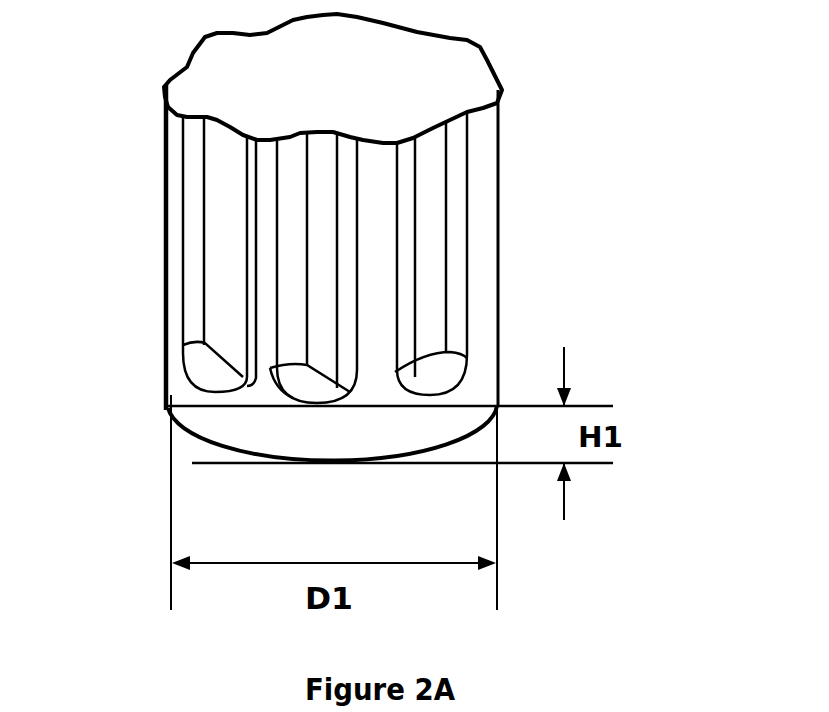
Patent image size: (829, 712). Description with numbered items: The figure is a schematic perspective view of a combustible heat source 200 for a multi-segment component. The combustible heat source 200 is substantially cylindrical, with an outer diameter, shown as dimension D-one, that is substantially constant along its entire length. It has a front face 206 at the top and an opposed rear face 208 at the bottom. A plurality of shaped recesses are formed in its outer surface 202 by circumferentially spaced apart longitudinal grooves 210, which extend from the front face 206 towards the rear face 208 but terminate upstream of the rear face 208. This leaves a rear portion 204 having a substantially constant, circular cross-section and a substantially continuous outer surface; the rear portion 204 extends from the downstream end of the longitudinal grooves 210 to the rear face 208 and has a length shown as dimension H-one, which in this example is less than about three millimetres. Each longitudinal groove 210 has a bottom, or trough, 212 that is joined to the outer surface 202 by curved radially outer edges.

The combustible heat source 200 is at (566, 77).
The outer surface 202 is at (268, 228).
The rear portion 204 is at (447, 425).
The front face 206 is at (198, 83).
The rear face 208 is at (203, 445).
The longitudinal grooves 210 is at (227, 307).
The trough 212 is at (458, 295).